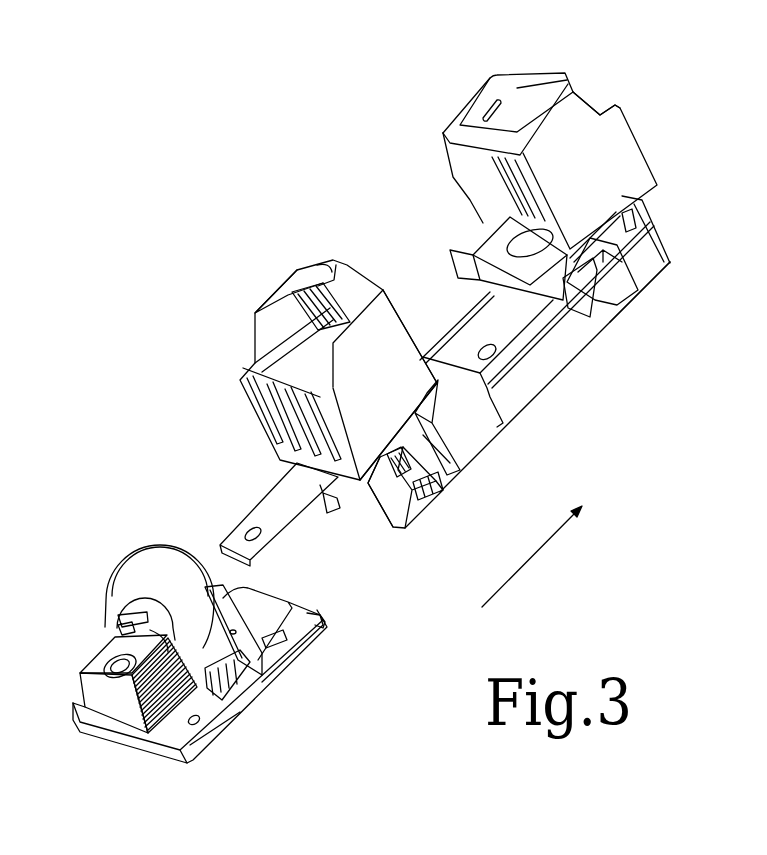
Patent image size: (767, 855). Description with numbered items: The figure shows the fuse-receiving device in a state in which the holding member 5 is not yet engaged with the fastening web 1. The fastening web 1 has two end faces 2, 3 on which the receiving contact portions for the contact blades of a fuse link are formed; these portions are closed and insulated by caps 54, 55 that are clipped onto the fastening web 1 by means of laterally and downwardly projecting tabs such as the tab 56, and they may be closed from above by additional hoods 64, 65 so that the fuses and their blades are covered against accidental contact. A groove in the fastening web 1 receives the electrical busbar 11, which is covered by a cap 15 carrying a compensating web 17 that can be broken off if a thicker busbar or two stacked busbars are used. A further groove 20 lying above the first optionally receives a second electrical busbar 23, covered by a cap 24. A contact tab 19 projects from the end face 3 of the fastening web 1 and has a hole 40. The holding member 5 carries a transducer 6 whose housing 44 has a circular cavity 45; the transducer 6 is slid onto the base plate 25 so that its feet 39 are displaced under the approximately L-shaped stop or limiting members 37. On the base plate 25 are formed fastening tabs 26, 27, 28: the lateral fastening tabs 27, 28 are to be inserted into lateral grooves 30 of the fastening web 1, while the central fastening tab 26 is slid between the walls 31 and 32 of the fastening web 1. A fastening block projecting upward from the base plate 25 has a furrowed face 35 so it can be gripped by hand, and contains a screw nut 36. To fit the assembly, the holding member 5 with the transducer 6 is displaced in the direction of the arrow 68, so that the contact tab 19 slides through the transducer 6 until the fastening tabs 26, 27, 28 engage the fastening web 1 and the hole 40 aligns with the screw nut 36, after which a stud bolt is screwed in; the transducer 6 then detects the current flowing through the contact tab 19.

The fastening web 1 is at (551, 344).
The end face 2 is at (577, 174).
The end face 3 is at (301, 344).
The holding member 5 is at (205, 670).
The transducer 6 is at (135, 565).
The electrical busbar 11 is at (620, 293).
The cap 15 is at (452, 250).
The compensating web 17 is at (593, 290).
The contact tab 19 is at (269, 511).
The further groove 20 is at (510, 368).
The electrical busbar 23 is at (463, 423).
The cap 24 is at (438, 373).
The base plate 25 is at (233, 712).
The central fastening tab 26 is at (253, 603).
The fastening tab 27 is at (305, 622).
The fastening tab 28 is at (222, 592).
The lateral grooves 30 is at (412, 514).
The wall 31 is at (383, 508).
The wall 32 is at (327, 497).
The furrowed face 35 is at (147, 733).
The screw nut 36 is at (140, 663).
The stop or limiting members 37 is at (227, 698).
The feet 39 is at (260, 668).
The hole 40 is at (243, 527).
The housing 44 is at (162, 585).
The circular cavity 45 is at (143, 618).
The cap 54 is at (612, 140).
The cap 55 is at (383, 325).
The tab 56 is at (437, 488).
The hood 64 is at (513, 125).
The hood 65 is at (347, 262).
The arrow 68 is at (532, 556).